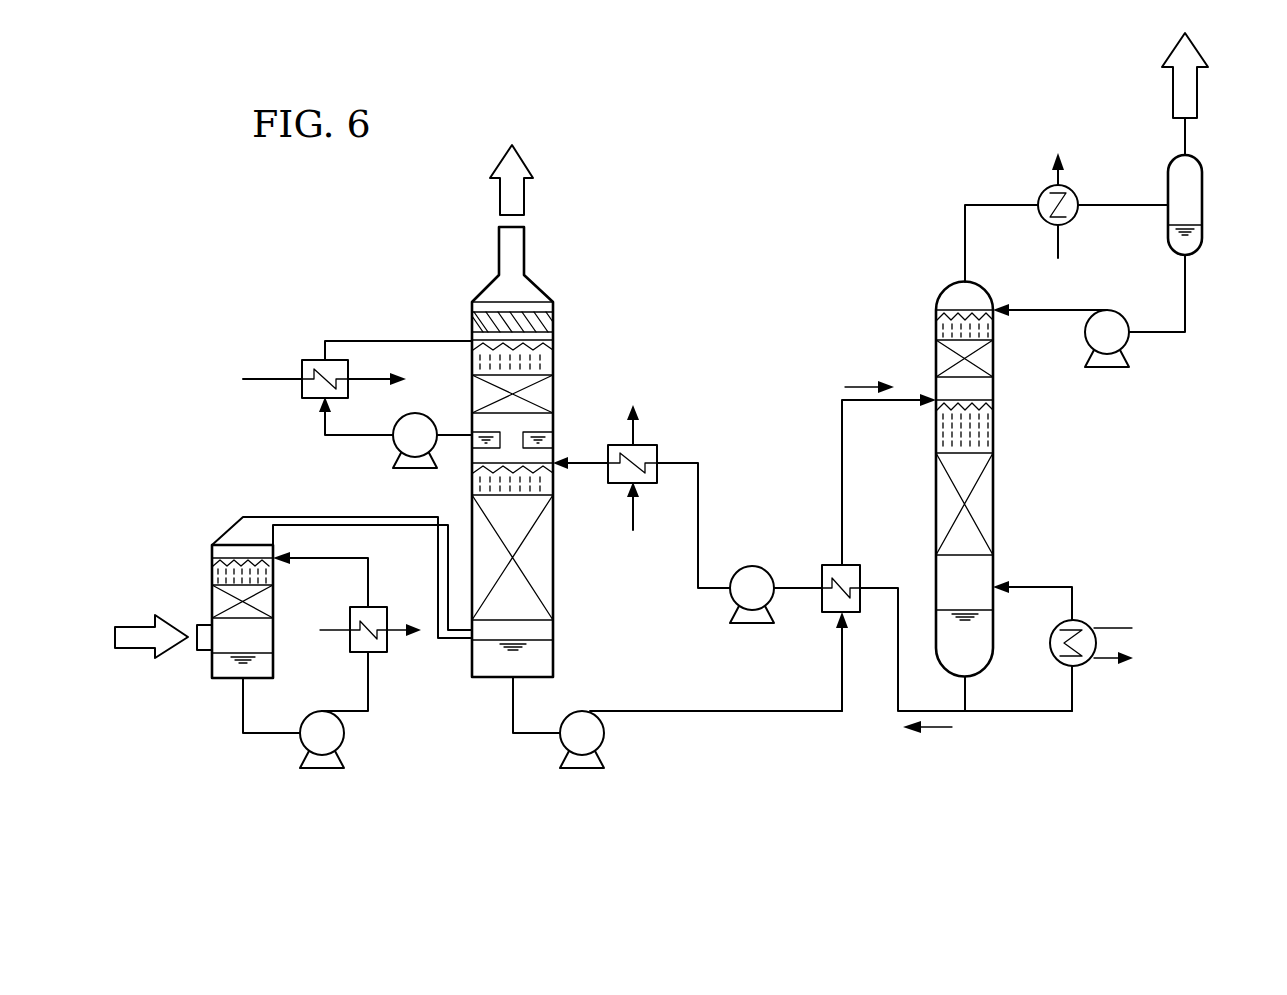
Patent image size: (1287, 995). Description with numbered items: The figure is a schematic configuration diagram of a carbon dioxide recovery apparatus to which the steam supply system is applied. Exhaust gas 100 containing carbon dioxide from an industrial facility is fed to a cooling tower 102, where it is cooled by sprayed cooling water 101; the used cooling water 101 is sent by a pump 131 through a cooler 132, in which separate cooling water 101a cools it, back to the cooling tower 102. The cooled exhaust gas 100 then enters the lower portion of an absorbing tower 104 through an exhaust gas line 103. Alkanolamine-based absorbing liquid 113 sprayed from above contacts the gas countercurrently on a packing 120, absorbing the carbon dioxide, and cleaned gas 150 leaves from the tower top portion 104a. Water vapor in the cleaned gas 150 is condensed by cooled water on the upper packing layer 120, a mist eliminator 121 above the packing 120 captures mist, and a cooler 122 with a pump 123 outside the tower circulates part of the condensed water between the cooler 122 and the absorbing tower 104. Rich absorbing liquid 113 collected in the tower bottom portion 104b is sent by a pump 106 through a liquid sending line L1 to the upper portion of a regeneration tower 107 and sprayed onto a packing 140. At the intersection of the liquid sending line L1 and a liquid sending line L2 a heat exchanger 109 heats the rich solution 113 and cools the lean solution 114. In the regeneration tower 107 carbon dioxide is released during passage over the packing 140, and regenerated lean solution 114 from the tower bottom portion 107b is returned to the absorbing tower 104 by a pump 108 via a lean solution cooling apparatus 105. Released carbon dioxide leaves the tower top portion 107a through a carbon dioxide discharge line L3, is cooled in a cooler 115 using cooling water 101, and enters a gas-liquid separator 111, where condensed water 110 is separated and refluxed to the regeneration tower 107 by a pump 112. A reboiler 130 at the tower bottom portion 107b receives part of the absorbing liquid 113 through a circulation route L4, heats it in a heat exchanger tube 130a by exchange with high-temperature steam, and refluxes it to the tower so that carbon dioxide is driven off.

The exhaust gas 100 is at (135, 650).
The cooling water 101 is at (212, 575).
The cooling water 101a is at (333, 633).
The cooling tower 102 is at (228, 516).
The exhaust gas line 103 is at (438, 558).
The absorbing tower 104 is at (556, 389).
The tower top portion 104a is at (499, 250).
The tower bottom portion 104b is at (483, 680).
The lean solution cooling apparatus 105 is at (651, 445).
The pump 106 is at (560, 755).
The regeneration tower 107 is at (1000, 421).
The tower top portion 107a is at (948, 283).
The tower bottom portion 107b is at (985, 668).
The pump 108 is at (730, 598).
The heat exchanger 109 is at (828, 565).
The condensed water 110 is at (472, 360).
The gas-liquid separator 111 is at (1202, 205).
The pump 112 is at (1128, 350).
The absorbing liquid 113 is at (553, 658).
The lean solution 114 is at (548, 484).
The cooler 115 is at (1042, 191).
The packing 120 is at (472, 393).
The mist eliminator 121 is at (472, 320).
The cooler 122 is at (310, 360).
The pump 123 is at (395, 447).
The reboiler 130 is at (1080, 621).
The heat exchanger tube 130a is at (1132, 628).
The pump 131 is at (345, 733).
The cooler 132 is at (388, 648).
The packing 140 is at (993, 510).
The cleaned gas 150 is at (524, 196).
The liquid sending line L1 is at (710, 714).
The liquid sending line L2 is at (897, 695).
The CO2 discharge line L3 is at (966, 205).
The circulation route L4 is at (1022, 713).